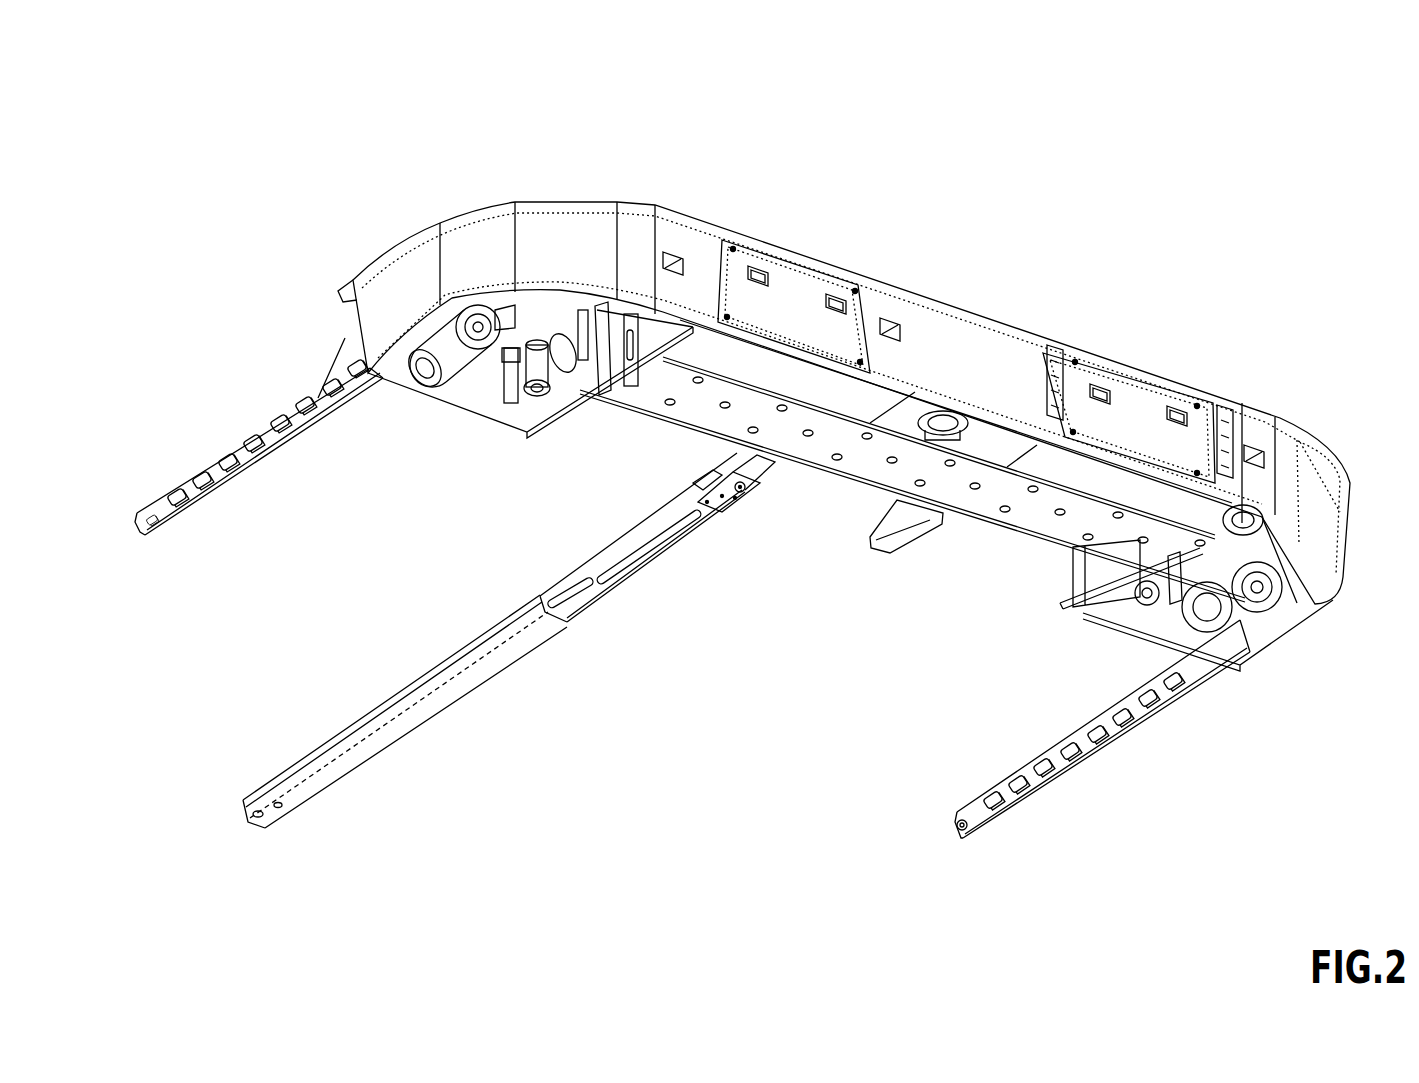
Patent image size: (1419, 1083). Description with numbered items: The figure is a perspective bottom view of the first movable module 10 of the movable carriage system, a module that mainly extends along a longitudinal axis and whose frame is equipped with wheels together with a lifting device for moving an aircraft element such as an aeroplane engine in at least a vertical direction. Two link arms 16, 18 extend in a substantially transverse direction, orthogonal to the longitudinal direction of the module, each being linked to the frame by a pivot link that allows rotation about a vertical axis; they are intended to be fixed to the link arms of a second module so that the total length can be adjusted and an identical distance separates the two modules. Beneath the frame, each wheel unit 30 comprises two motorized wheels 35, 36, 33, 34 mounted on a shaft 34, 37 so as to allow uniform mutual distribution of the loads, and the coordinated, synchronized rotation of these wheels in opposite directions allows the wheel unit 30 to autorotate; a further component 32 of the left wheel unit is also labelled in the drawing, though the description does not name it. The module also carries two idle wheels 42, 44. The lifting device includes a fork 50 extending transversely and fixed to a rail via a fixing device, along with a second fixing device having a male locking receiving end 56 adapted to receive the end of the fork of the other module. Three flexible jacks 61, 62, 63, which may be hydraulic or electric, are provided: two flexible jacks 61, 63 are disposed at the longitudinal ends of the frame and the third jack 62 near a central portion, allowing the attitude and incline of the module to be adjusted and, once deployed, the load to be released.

The first movable module 10 is at (292, 147).
The link arm 16 is at (968, 777).
The link arm 18 is at (166, 446).
The wheel unit 30 is at (1370, 717).
The roller 32 is at (432, 398).
The motorized wheel 33 is at (478, 376).
The motorized wheel 34 is at (427, 368).
The motorized wheel 35 is at (1226, 661).
The motorized wheel 36 is at (1268, 634).
The shaft 37 is at (1215, 615).
The idle wheel 42 is at (1275, 544).
The idle wheel 44 is at (640, 342).
The fork 50 is at (523, 667).
The male locking receiving end 56 is at (875, 565).
The flexible jack 61 is at (538, 400).
The flexible jack 62 is at (950, 438).
The flexible jack 63 is at (1135, 603).